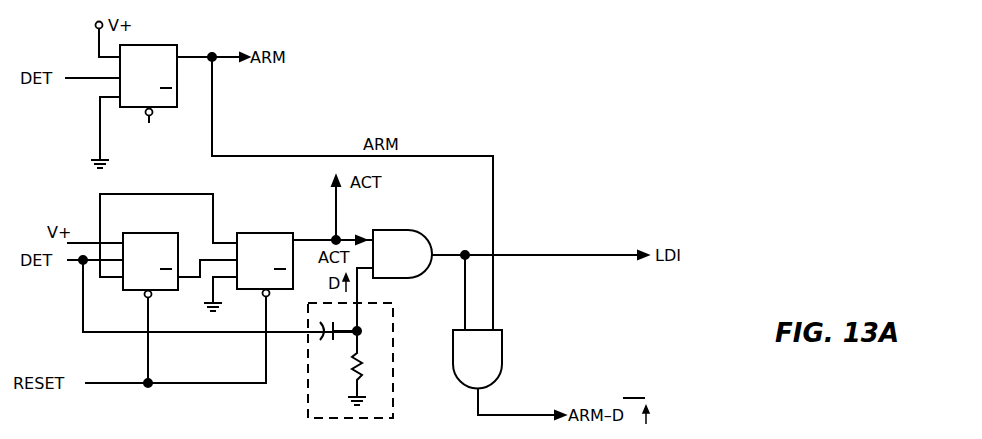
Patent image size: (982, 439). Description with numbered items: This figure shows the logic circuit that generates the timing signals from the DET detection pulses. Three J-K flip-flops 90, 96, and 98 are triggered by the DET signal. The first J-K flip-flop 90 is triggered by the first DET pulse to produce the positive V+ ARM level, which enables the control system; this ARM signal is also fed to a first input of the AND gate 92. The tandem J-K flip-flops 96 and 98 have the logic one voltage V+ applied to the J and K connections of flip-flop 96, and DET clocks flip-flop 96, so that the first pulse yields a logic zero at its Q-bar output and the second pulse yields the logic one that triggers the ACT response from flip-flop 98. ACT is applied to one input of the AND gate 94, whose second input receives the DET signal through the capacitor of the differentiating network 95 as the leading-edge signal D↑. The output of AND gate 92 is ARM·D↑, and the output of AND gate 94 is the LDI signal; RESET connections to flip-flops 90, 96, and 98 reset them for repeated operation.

The J-K flip-flop 90 is at (171, 43).
The AND gate 92 is at (503, 345).
The AND gate 94 is at (394, 230).
The differentiating network 95 is at (395, 350).
The J-K flip-flop 96 is at (146, 233).
The J-K flip-flop 98 is at (266, 233).